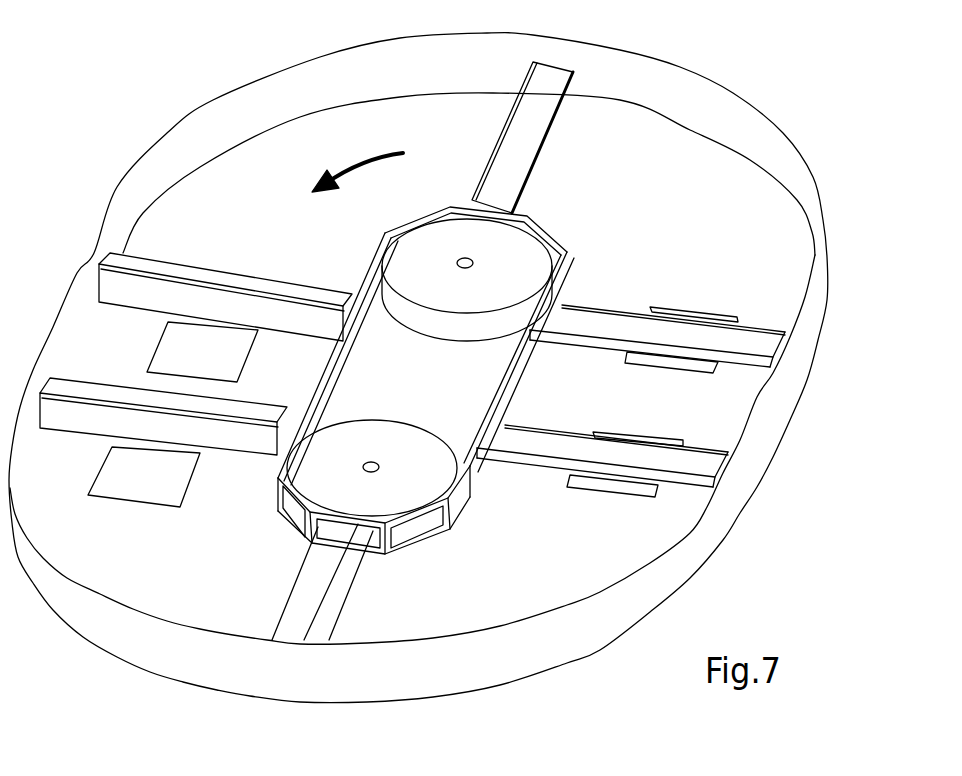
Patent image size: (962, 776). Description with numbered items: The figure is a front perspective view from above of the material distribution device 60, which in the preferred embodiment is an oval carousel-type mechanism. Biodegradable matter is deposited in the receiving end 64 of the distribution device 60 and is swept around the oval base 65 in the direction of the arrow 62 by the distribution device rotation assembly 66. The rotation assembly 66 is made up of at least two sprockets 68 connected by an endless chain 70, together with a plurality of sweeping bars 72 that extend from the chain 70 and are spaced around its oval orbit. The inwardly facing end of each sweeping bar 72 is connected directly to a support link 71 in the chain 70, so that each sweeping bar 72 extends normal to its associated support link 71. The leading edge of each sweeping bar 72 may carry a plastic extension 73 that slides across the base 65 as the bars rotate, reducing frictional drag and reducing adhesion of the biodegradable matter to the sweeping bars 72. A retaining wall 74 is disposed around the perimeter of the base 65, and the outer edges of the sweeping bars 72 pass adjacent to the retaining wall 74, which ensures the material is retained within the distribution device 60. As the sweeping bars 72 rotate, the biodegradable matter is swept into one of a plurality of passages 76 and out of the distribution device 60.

The distribution device 60 is at (104, 126).
The arrow 62 is at (358, 157).
The receiving end 64 is at (578, 134).
The oval base 65 is at (237, 212).
The distribution device rotation assembly 66 is at (474, 513).
The sprocket 68 is at (523, 258).
The endless chain 70 is at (515, 384).
The support link 71 is at (480, 477).
The sweeping bar 72 is at (152, 292).
The plastic extension 73 is at (107, 257).
The retaining wall 74 is at (218, 118).
The passage 76 is at (173, 350).